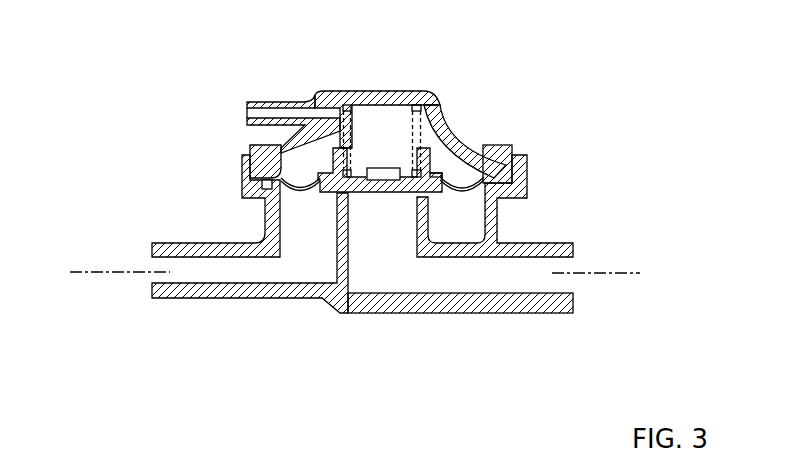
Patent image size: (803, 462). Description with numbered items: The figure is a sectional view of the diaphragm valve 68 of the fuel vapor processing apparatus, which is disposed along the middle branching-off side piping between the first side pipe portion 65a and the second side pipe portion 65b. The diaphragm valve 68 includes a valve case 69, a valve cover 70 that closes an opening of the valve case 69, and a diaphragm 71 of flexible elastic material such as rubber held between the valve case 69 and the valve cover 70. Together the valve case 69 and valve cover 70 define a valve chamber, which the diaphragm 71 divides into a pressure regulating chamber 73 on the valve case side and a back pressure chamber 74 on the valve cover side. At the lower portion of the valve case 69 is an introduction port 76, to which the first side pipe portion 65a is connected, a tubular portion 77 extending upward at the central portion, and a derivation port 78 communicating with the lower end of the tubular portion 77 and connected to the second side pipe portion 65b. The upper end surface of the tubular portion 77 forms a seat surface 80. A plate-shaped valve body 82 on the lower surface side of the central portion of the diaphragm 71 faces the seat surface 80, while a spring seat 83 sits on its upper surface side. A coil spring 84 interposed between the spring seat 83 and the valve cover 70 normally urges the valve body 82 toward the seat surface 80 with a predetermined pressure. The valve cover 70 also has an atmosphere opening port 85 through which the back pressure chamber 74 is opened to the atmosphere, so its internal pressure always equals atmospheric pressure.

The first side pipe portion 65a is at (93, 277).
The second side pipe portion 65b is at (600, 278).
The diaphragm valve 68 is at (532, 105).
The valve case 69 is at (276, 302).
The valve cover 70 is at (323, 89).
The diaphragm 71 is at (463, 181).
The pressure regulating chamber 73 is at (314, 221).
The back pressure chamber 74 is at (304, 164).
The introduction port 76 is at (207, 290).
The tubular portion 77 is at (430, 217).
The derivation port 78 is at (437, 305).
The seat surface 80 is at (405, 194).
The valve body 82 is at (377, 168).
The spring seat 83 is at (440, 158).
The spring 84 is at (438, 108).
The atmosphere opening port 85 is at (267, 101).